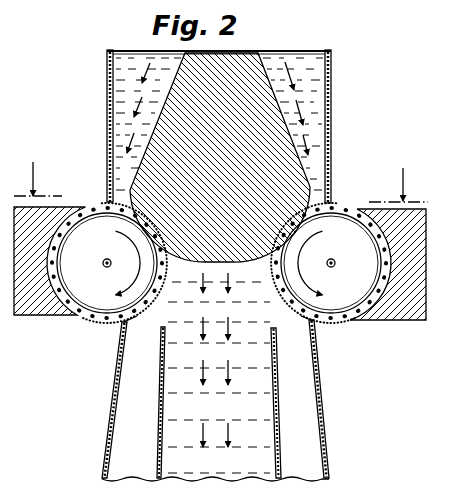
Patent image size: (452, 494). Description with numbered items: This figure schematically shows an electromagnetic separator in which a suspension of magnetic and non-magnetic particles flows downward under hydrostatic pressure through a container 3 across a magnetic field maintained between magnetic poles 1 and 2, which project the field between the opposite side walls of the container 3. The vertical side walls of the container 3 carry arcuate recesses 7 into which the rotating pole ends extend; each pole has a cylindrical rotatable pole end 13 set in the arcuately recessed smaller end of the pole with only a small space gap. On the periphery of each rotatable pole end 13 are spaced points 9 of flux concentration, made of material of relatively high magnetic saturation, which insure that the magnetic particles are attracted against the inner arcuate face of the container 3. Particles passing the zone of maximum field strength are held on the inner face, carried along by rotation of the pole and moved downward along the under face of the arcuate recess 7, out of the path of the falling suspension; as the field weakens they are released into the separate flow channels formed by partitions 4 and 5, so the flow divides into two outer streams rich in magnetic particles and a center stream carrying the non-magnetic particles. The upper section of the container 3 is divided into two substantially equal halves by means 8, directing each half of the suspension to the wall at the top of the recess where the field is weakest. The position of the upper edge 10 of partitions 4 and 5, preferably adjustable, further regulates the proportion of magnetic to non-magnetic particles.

The magnetic pole 1 is at (62, 205).
The magnetic pole 2 is at (370, 210).
The container 3 is at (107, 132).
The partition 4 is at (160, 412).
The partition 5 is at (337, 437).
The arcuate recess 7 is at (133, 316).
The dividing means 8 is at (198, 52).
The points of flux concentration 9 is at (107, 315).
The upper edge of partition 10 is at (160, 328).
The cylindrical rotatable pole end 13 is at (100, 317).